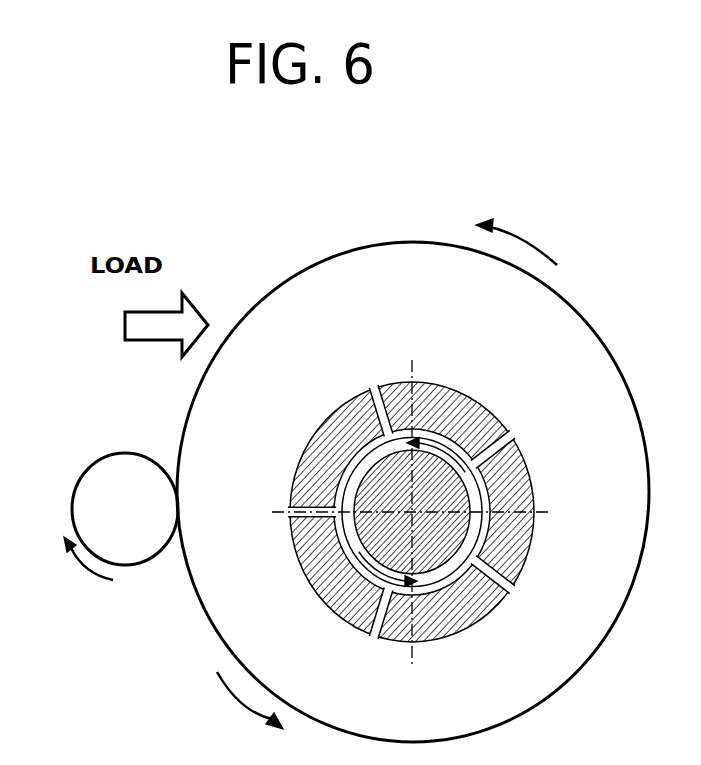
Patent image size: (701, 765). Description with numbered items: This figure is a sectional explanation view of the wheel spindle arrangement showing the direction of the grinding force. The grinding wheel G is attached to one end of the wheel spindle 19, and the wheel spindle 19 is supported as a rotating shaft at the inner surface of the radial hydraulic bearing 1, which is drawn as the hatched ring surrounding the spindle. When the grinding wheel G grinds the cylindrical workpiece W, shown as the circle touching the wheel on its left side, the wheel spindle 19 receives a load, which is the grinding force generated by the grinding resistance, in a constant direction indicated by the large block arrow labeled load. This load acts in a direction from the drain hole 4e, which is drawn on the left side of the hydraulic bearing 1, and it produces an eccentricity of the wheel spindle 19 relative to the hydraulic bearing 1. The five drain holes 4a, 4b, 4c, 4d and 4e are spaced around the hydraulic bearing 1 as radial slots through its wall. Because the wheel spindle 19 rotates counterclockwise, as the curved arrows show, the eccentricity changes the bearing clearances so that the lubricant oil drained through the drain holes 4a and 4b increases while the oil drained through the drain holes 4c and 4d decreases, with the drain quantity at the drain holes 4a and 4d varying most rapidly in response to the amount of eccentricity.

The hydraulic bearing 1 is at (303, 568).
The drain hole 4a is at (373, 630).
The drain hole 4b is at (513, 577).
The drain hole 4c is at (514, 444).
The drain hole 4d is at (366, 391).
The drain hole 4e is at (295, 507).
The wheel spindle 19 is at (458, 462).
The grinding wheel G is at (570, 340).
The workpiece W is at (112, 460).